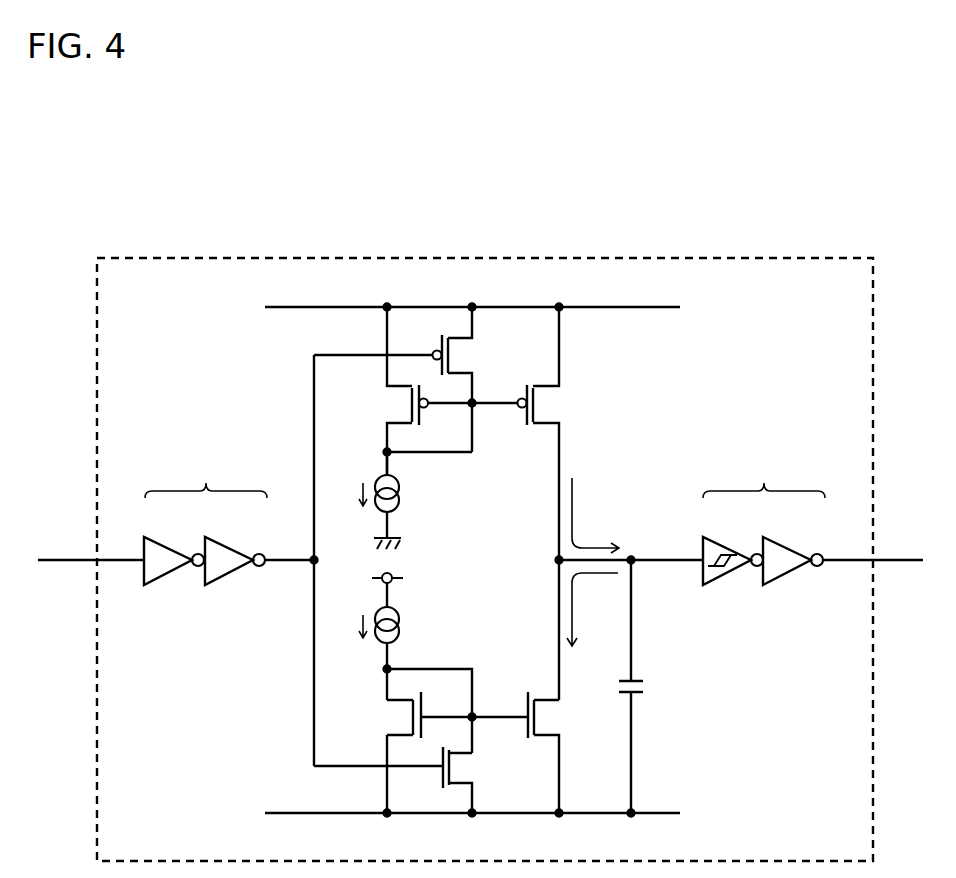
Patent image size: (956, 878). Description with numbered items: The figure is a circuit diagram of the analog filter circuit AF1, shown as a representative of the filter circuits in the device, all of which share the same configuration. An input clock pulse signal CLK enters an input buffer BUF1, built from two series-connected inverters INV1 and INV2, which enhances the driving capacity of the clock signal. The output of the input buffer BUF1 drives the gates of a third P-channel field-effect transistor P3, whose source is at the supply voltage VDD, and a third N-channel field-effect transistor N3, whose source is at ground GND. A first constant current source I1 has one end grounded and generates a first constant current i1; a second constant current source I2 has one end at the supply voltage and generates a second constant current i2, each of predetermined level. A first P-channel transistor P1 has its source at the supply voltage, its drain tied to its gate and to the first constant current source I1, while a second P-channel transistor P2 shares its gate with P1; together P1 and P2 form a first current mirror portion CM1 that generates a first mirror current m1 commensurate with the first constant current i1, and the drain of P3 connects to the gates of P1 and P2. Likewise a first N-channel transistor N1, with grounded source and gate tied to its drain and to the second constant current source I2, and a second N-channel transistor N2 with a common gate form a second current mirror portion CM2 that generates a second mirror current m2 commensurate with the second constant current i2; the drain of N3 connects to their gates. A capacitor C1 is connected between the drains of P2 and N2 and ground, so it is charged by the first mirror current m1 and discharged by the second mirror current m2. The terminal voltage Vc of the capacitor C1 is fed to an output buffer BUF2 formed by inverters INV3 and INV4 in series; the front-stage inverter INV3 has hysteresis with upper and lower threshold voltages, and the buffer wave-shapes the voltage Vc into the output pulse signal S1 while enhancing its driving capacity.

The analog filter circuit AF1 is at (487, 258).
The input buffer BUF1 is at (205, 520).
The output buffer BUF2 is at (764, 520).
The inverter INV1 is at (177, 545).
The inverter INV2 is at (239, 545).
The front-stage inverter INV3 is at (736, 545).
The inverter INV4 is at (798, 545).
The first current mirror portion CM1 is at (436, 503).
The second current mirror portion CM2 is at (436, 729).
The first P-channel field-effect transistor P1 is at (419, 420).
The second P-channel field-effect transistor P2 is at (527, 392).
The third P-channel field-effect transistor P3 is at (442, 345).
The first N-channel field-effect transistor N1 is at (421, 700).
The second N-channel field-effect transistor N2 is at (528, 735).
The third N-channel field-effect transistor N3 is at (443, 782).
The first constant current source I1 is at (399, 494).
The second constant current source I2 is at (399, 626).
The first constant current i1 is at (350, 496).
The second constant current i2 is at (350, 628).
The first mirror current m1 is at (595, 515).
The second mirror current m2 is at (592, 609).
The capacitor C1 is at (645, 688).
The clock pulse signal CLK is at (178, 560).
The output pulse signal S1 is at (873, 548).
The terminal voltage Vc is at (629, 550).
The power supply VDD is at (444, 442).
The ground GND is at (445, 675).